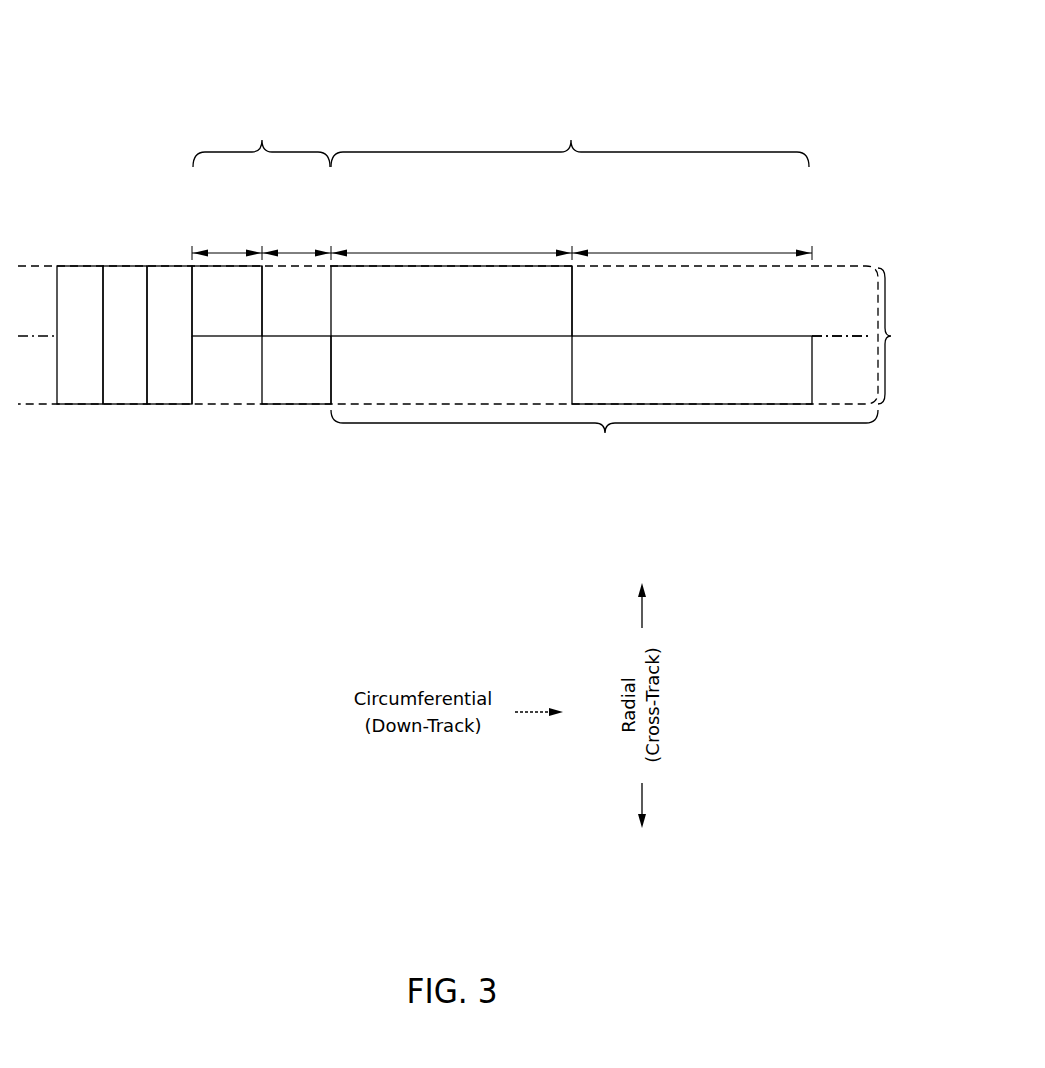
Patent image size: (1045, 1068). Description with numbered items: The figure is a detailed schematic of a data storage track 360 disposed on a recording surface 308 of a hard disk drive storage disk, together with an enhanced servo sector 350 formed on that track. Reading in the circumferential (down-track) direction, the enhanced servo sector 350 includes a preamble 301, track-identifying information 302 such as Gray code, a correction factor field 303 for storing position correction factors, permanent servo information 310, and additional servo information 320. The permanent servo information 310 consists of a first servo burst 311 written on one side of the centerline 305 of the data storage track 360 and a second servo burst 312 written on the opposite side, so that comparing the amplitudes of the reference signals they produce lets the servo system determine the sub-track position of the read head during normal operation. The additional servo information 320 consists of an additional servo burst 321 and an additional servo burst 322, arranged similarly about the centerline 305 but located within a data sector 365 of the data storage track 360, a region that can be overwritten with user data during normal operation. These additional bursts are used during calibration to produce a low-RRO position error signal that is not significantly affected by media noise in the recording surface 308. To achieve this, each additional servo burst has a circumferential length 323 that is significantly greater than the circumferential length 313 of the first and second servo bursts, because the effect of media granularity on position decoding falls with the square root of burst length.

The enhanced servo sector 350 is at (167, 47).
The recording surface 308 is at (410, 77).
The preamble 301 is at (63, 347).
The track-identifying information 302 is at (108, 347).
The correction factor field 303 is at (153, 347).
The permanent servo information 310 is at (262, 143).
The first servo burst 311 is at (210, 312).
The second servo burst 312 is at (279, 381).
The circumferential length 313 is at (222, 250).
The additional servo information 320 is at (571, 148).
The additional servo burst 321 is at (434, 312).
The additional servo burst 322 is at (675, 381).
The circumferential (downtrack) length 323 is at (413, 250).
The centerline 305 is at (840, 332).
The data storage track 360 is at (891, 336).
The data sector 365 is at (605, 432).